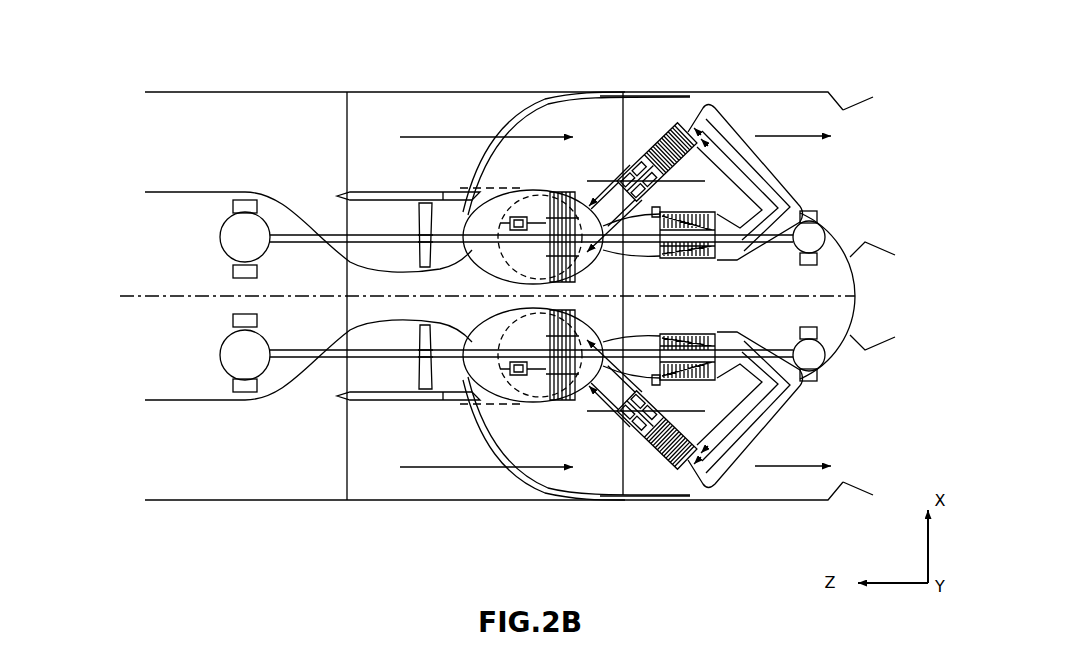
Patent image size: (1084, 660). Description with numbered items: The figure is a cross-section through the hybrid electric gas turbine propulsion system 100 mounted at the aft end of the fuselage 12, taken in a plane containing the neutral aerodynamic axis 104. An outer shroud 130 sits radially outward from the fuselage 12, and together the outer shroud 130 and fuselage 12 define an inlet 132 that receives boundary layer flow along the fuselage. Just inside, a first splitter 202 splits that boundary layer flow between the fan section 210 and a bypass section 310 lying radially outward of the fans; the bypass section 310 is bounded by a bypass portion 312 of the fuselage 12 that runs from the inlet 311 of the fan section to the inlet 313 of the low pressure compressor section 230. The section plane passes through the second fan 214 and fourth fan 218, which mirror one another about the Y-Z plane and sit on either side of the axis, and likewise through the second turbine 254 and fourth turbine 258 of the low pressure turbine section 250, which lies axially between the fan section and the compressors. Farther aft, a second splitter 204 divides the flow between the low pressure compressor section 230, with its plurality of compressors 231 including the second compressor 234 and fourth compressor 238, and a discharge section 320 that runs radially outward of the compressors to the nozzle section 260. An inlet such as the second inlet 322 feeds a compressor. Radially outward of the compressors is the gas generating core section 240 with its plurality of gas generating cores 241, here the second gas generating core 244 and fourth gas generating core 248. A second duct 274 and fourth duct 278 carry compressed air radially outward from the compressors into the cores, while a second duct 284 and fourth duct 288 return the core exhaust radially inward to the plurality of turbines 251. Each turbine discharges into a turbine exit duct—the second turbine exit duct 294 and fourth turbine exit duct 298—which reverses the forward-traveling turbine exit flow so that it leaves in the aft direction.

The hybrid electric gas turbine propulsion system 100 is at (153, 68).
The fuselage 12 is at (152, 368).
The neutral aerodynamic axis 104 is at (838, 292).
The outer shroud 130 is at (400, 90).
The inlet 132 is at (152, 470).
The first splitter 202 is at (338, 398).
The second splitter 204 is at (583, 188).
The fan section 210 is at (406, 226).
The second fan 214 is at (420, 400).
The fourth fan 218 is at (480, 200).
The low pressure compressor (LPC) section 230 is at (690, 272).
The plurality of compressors 231 is at (712, 250).
The second compressor 234 is at (664, 338).
The fourth compressor 238 is at (690, 212).
The gas generating core section 240 is at (642, 445).
The plurality of gas generating cores 241 is at (678, 458).
The second gas generating core 244 is at (667, 440).
The fourth gas generating core 248 is at (648, 178).
The low pressure turbine (LPT) section 250 is at (570, 395).
The plurality of turbines 251 is at (580, 395).
The second turbine 254 is at (557, 403).
The fourth turbine 258 is at (525, 187).
The nozzle section 260 is at (847, 113).
The second duct 274 is at (747, 448).
The fourth duct 278 is at (737, 137).
The second duct 284 is at (585, 336).
The fourth duct 288 is at (601, 248).
The second turbine exit duct 294 is at (493, 415).
The fourth turbine exit duct 298 is at (495, 176).
The bypass section 310 is at (444, 125).
The inlet of the fan section 311 is at (315, 210).
The bypass portion 312 is at (414, 197).
The inlet of the LPC section 313 is at (579, 186).
The discharge section 320 is at (629, 126).
The second inlet 322 is at (683, 140).